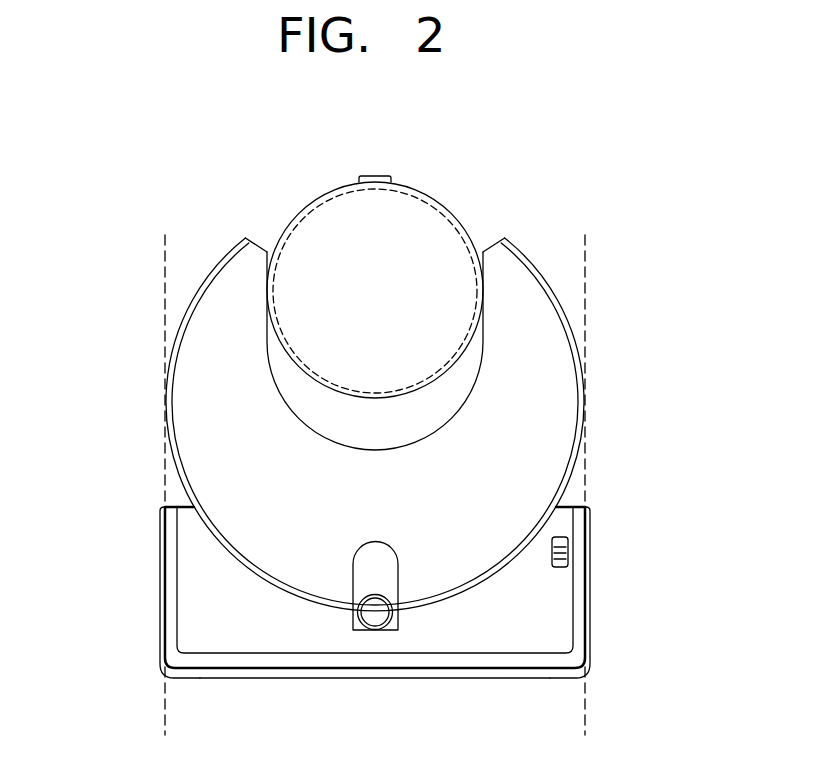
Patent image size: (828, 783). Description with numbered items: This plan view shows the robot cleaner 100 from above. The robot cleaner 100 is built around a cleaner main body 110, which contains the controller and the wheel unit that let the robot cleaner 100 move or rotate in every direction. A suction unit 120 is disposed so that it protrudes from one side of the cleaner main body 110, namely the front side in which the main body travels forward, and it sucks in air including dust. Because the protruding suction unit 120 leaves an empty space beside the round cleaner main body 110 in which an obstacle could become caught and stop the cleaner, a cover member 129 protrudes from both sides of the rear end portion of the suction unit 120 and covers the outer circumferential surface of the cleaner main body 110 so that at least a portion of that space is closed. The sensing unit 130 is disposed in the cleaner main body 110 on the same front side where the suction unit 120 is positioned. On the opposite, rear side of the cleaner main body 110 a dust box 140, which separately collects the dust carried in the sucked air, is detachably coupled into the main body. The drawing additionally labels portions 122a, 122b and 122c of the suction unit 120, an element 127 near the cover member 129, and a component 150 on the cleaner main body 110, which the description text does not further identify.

The robot cleaner 100 is at (186, 166).
The cleaner main body 110 is at (553, 398).
The suction unit 120 is at (532, 617).
The bottom wall 122a is at (482, 678).
The right side wall 122b is at (590, 580).
The left side wall 122c is at (160, 578).
The button 127 is at (568, 540).
The cover member 129 is at (568, 500).
The sensing unit 130 is at (367, 575).
The dust box 140 is at (442, 210).
The cyclone unit 150 is at (323, 197).